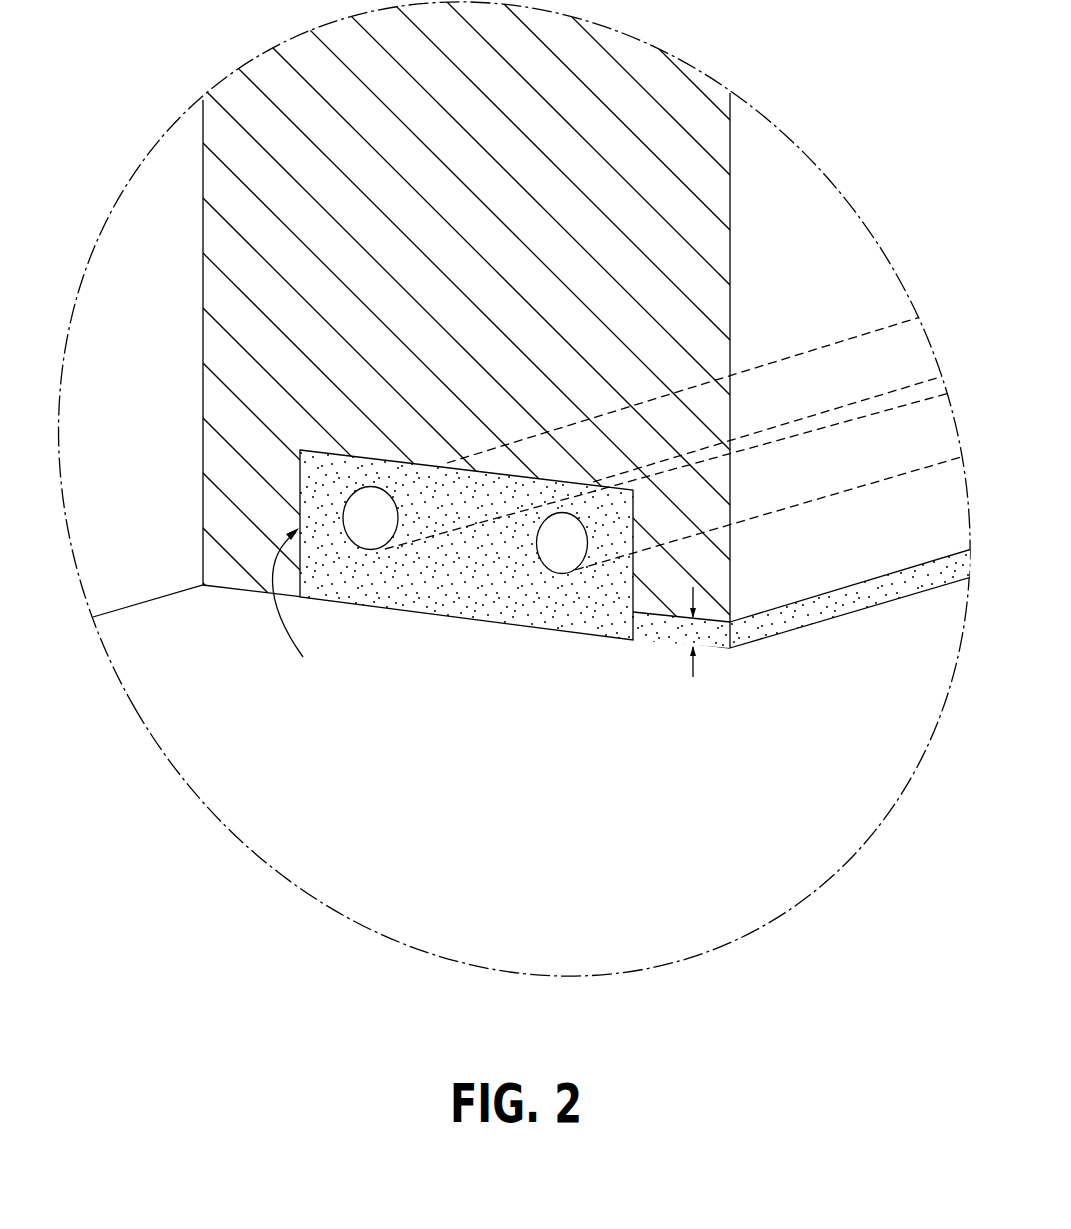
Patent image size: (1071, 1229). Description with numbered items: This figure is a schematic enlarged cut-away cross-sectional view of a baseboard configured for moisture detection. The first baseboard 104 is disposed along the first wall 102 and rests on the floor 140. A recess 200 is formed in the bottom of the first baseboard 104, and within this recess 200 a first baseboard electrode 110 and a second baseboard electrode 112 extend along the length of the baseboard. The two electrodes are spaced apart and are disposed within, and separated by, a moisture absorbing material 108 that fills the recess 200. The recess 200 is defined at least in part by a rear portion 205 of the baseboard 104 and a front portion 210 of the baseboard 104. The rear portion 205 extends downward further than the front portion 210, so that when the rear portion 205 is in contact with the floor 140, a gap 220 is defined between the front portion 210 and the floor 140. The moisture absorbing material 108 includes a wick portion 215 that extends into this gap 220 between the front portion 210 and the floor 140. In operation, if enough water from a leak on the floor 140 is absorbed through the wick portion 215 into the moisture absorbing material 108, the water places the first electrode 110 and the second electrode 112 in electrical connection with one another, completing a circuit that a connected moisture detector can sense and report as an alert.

The first wall 102 is at (102, 405).
The first baseboard 104 is at (785, 283).
The floor 140 is at (663, 866).
The moisture absorbing material 108 is at (463, 587).
The first baseboard electrode 110 is at (367, 530).
The second baseboard electrode 112 is at (558, 550).
The recess 200 is at (298, 608).
The rear portion 205 is at (240, 537).
The front portion 210 is at (672, 592).
The wick portion 215 is at (695, 635).
The gap 220 is at (697, 600).